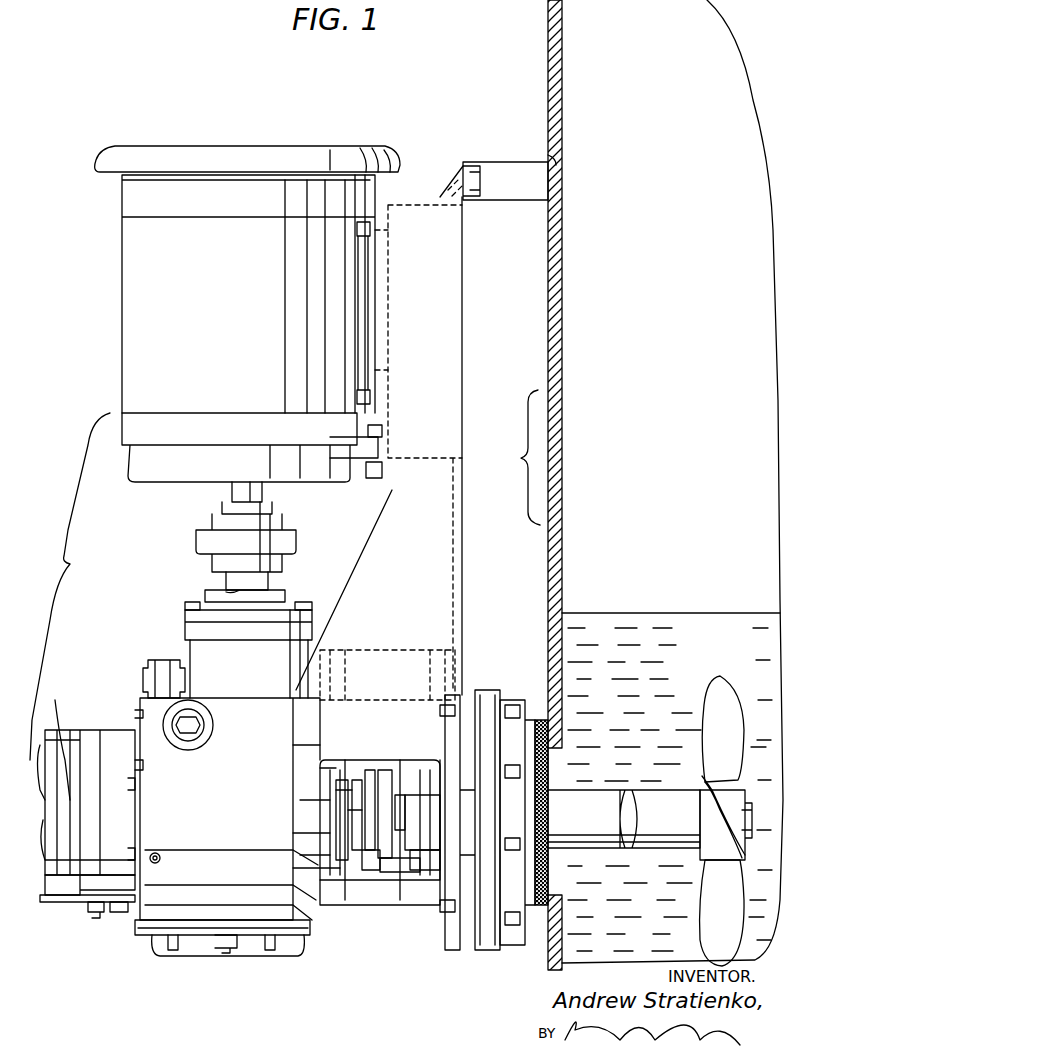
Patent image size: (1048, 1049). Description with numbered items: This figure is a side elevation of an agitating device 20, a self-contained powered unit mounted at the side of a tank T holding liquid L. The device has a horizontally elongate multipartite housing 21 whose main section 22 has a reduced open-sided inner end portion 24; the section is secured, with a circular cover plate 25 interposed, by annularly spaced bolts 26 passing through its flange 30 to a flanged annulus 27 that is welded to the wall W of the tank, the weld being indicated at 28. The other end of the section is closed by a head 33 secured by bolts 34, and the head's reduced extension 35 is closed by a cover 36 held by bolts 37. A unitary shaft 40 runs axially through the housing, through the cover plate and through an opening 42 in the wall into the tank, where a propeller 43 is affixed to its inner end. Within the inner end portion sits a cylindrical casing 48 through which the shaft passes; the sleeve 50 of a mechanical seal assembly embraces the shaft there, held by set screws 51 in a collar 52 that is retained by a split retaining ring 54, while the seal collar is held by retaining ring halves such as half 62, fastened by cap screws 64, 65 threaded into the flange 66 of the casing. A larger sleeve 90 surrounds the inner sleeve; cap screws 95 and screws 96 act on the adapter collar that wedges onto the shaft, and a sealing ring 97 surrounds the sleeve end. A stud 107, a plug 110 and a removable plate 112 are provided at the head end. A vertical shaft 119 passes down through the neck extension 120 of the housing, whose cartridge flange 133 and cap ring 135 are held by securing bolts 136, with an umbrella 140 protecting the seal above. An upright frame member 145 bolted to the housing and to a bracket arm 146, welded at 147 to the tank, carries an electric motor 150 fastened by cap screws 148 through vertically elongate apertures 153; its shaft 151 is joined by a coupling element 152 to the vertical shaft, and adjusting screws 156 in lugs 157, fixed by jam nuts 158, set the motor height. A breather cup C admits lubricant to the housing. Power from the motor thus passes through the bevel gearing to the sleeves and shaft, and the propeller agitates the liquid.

The agitating device 20 is at (65, 586).
The housing 21 is at (448, 985).
The main section 22 is at (302, 960).
The inner end portion 24 is at (372, 910).
The cover plate 25 is at (470, 690).
The bolts 26 is at (440, 710).
The flanged annulus 27 is at (512, 730).
The weld 28 is at (540, 905).
The flange 30 is at (442, 806).
The head 33 is at (128, 708).
The bolts 34 is at (126, 772).
The extension 35 is at (105, 905).
The cover 36 is at (60, 900).
The bolts 37 is at (42, 710).
The shaft 40 is at (355, 780).
The opening 42 is at (562, 760).
The propeller 43 is at (722, 678).
The cylindrical casing 48 is at (412, 872).
The sleeve 50 is at (360, 815).
The set screws 51 is at (398, 795).
The collar 52 is at (420, 838).
The split retaining ring 54 is at (352, 800).
The retaining ring half 62 is at (370, 770).
The cap screw 64 is at (340, 778).
The cap screw 65 is at (366, 870).
The flange 66 is at (388, 770).
The sleeve 90 is at (336, 778).
The cap screws 95 is at (340, 870).
The screws 96 is at (325, 752).
The sealing ring 97 is at (332, 840).
The stud 107 is at (120, 912).
The plug 110 is at (98, 890).
The removable plate 112 is at (45, 780).
The vertical shaft 119 is at (226, 582).
The neck extension 120 is at (300, 662).
The flange 133 is at (312, 625).
The cap ring 135 is at (185, 626).
The securing bolts 136 is at (185, 606).
The umbrella 140 is at (280, 592).
The frame member 145 is at (440, 550).
The bracket arm 146 is at (510, 186).
The weld 147 is at (548, 162).
The cap screws 148 is at (357, 229).
The electric motor 150 is at (122, 282).
The motor shaft 151 is at (232, 493).
The coupling element 152 is at (196, 538).
The apertures 153 is at (390, 368).
The adjusting screws 156 is at (372, 478).
The lug 157 is at (330, 440).
The jam nuts 158 is at (384, 430).
The breather cup C is at (145, 680).
The liquid L is at (681, 630).
The tank T is at (638, 481).
The wall W is at (550, 604).